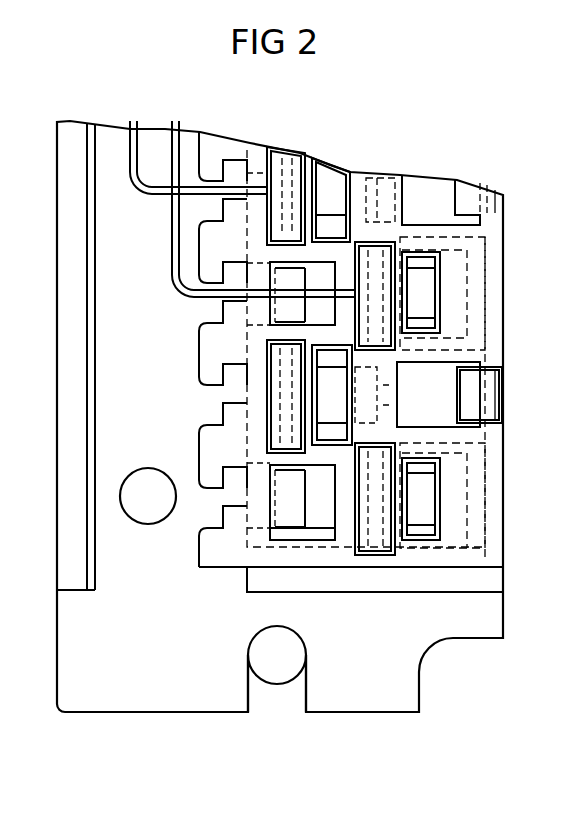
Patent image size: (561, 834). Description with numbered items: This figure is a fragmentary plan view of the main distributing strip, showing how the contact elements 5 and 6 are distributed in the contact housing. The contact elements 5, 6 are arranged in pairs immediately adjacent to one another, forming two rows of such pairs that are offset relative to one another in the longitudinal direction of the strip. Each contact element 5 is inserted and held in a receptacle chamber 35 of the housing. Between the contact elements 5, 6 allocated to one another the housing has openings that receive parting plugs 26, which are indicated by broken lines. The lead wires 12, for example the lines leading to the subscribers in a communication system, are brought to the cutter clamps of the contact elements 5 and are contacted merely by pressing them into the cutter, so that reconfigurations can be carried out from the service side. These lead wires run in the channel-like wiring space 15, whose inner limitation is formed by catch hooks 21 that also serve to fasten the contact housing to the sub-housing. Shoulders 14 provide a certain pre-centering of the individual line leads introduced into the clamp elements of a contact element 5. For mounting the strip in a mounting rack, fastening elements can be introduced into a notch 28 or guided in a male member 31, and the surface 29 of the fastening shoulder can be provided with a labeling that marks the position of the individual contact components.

The contact element 5 is at (287, 152).
The contact element 6 is at (390, 182).
The lead wire 12 is at (173, 123).
The shoulder 14 is at (207, 331).
The wiring space 15 is at (280, 416).
The catch hook 21 is at (468, 389).
The parting plug 26 is at (332, 170).
The notch 28 is at (283, 682).
The surface 29 is at (118, 693).
The male member 31 is at (141, 462).
The receptacle chamber 35 is at (363, 230).